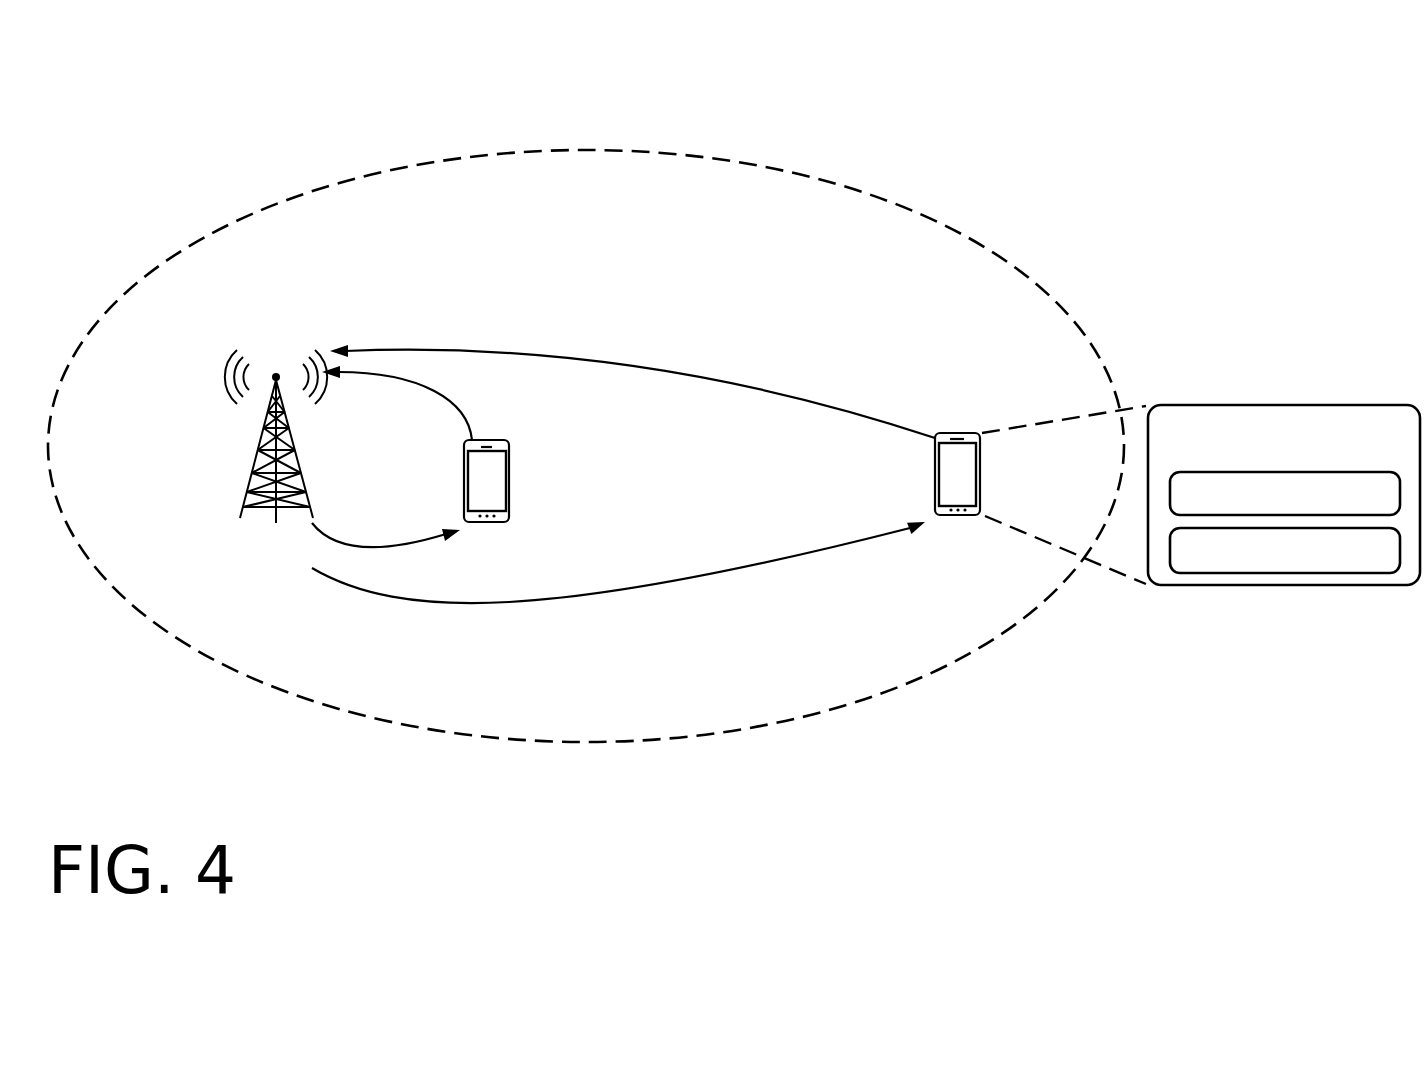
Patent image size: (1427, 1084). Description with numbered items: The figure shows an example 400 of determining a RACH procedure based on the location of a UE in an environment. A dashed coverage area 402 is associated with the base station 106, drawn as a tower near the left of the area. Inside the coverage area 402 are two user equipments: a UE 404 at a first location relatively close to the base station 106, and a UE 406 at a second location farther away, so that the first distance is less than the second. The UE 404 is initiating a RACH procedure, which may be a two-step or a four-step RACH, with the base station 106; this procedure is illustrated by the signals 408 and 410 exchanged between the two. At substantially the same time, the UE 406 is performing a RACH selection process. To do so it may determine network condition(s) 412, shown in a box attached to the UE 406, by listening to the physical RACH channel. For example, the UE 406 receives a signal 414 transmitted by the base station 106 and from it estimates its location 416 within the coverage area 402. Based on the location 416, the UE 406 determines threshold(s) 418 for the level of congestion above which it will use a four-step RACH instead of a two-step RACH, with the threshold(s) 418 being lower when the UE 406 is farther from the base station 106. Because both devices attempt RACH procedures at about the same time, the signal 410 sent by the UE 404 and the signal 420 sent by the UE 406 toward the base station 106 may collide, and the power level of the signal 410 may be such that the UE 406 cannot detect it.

The example 400 is at (125, 51).
The coverage area 402 is at (803, 717).
The base station 106 is at (260, 455).
The UE 404 is at (509, 495).
The UE 406 is at (948, 518).
The signal 408 is at (410, 540).
The signal 410 is at (447, 402).
The network condition(s) 412 is at (1264, 462).
The signal 414 is at (718, 572).
The location 416 is at (1355, 506).
The threshold(s) 418 is at (1380, 562).
The signal 420 is at (622, 365).